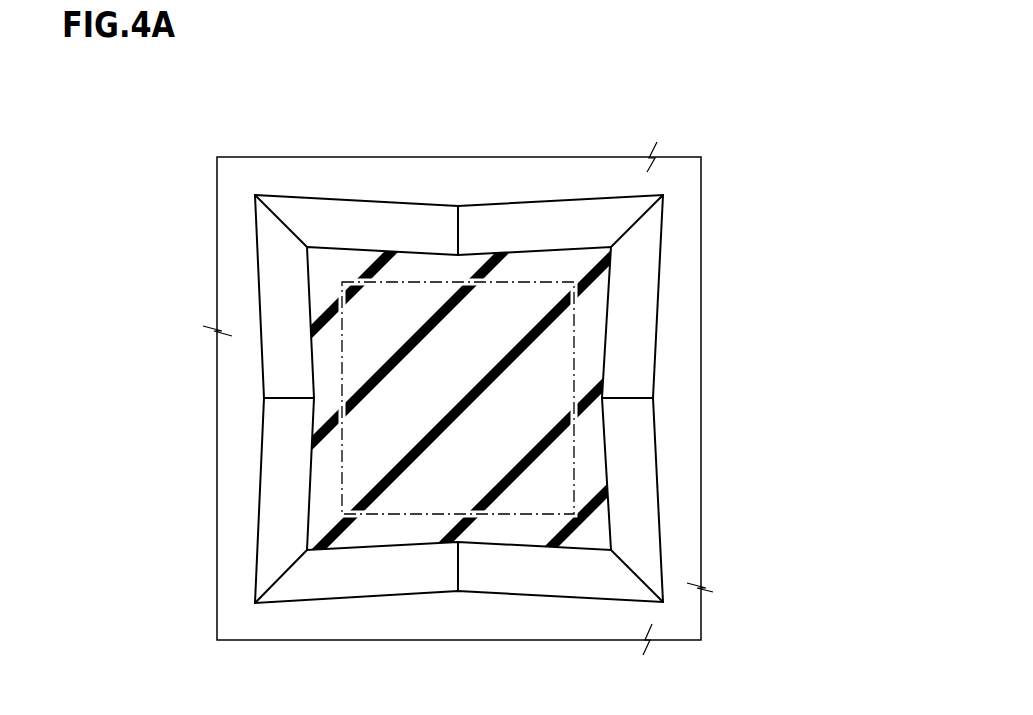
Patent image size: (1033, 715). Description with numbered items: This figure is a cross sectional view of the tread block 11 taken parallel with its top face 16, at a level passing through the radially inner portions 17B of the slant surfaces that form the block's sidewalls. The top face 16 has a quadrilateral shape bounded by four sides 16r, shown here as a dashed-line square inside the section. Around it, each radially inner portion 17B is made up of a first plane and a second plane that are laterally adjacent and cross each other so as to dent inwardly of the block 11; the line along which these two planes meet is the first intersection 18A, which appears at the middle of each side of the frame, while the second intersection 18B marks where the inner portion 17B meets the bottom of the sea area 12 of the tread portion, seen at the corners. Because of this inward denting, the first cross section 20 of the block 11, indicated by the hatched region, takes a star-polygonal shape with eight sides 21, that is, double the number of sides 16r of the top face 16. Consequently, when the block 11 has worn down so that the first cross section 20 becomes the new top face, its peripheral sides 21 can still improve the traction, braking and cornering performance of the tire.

The block 11 is at (703, 152).
The sea area 12 is at (667, 615).
The top face 16 is at (457, 401).
The side 16r is at (341, 366).
The radially inner portion 17B is at (459, 398).
The first intersection 18A is at (460, 232).
The second intersection 18B is at (295, 196).
The first cross section 20 is at (465, 376).
The side 21 is at (358, 248).